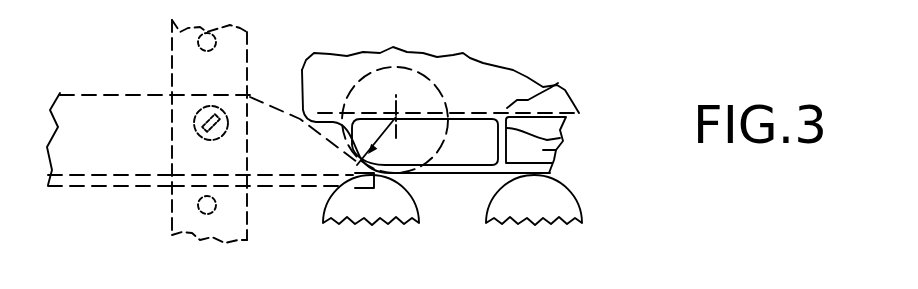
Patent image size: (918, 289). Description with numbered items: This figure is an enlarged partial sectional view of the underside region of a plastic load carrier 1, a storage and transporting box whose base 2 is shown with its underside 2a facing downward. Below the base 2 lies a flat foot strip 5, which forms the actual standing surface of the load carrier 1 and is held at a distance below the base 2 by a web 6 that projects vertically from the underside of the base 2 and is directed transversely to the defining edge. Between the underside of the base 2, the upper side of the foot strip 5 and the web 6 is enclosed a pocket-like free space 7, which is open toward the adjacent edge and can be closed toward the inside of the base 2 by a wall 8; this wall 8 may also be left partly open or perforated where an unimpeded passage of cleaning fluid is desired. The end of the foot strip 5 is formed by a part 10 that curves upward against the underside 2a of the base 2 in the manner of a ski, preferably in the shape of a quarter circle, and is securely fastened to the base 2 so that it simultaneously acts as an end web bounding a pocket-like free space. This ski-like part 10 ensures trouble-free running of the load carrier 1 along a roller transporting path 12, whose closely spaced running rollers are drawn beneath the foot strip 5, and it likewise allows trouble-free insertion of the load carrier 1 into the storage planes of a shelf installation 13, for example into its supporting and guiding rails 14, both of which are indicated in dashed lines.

The load carrier 1 is at (471, 58).
The base 2 is at (512, 106).
The underside of the base 2a is at (300, 163).
The foot strip 5 is at (481, 177).
The web 6 is at (562, 138).
The free space 7 is at (451, 150).
The wall 8 is at (418, 182).
The curved part 10 is at (355, 158).
The roller transporting path 12 is at (598, 206).
The shelf installation 13 is at (173, 72).
The supporting and guiding rail 14 is at (120, 160).